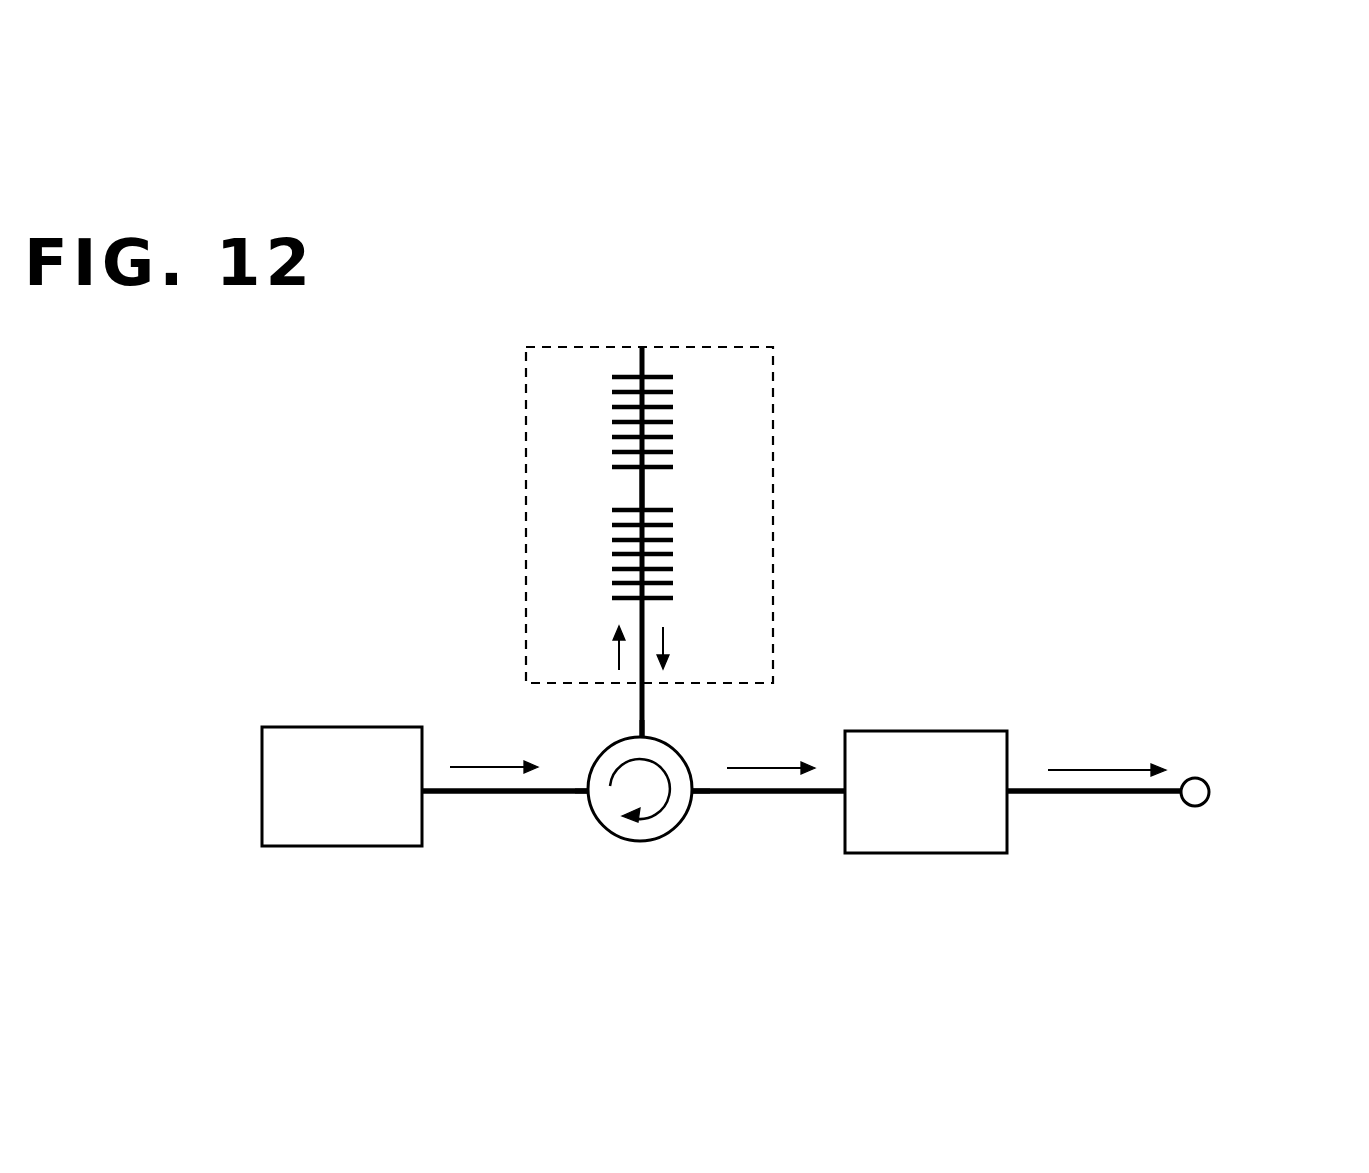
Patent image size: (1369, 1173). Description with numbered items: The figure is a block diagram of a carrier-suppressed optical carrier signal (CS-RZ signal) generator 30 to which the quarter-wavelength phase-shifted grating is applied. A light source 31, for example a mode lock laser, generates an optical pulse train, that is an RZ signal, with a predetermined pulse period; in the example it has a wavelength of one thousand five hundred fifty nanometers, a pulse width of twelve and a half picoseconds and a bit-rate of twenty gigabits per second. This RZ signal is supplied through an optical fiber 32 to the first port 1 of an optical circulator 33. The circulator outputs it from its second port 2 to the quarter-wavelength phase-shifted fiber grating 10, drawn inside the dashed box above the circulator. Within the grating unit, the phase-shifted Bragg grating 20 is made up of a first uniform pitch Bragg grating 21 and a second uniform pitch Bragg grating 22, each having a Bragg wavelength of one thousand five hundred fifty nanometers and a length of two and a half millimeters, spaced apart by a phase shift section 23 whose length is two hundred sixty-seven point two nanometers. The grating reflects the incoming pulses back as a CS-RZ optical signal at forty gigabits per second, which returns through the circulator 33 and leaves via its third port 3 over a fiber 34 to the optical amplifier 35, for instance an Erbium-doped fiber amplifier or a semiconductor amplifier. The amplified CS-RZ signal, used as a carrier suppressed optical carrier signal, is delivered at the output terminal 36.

The phase-shifted fiber grating 10 is at (525, 405).
The phase-shifted Bragg grating 20 is at (598, 377).
The first uniform pitch Bragg grating 21 is at (690, 510).
The second uniform pitch Bragg grating 22 is at (690, 377).
The phase shift section 23 is at (686, 470).
The CS-RZ signal generator 30 is at (858, 311).
The light source 31 is at (370, 727).
The optical fiber 32 is at (484, 795).
The optical circulator 33 is at (640, 844).
The output optical fiber 34 is at (777, 795).
The optical amplifier 35 is at (954, 731).
The output terminal 36 is at (1195, 807).
The circulator port 1 is at (578, 772).
The circulator port 2 is at (626, 720).
The circulator port 3 is at (702, 772).